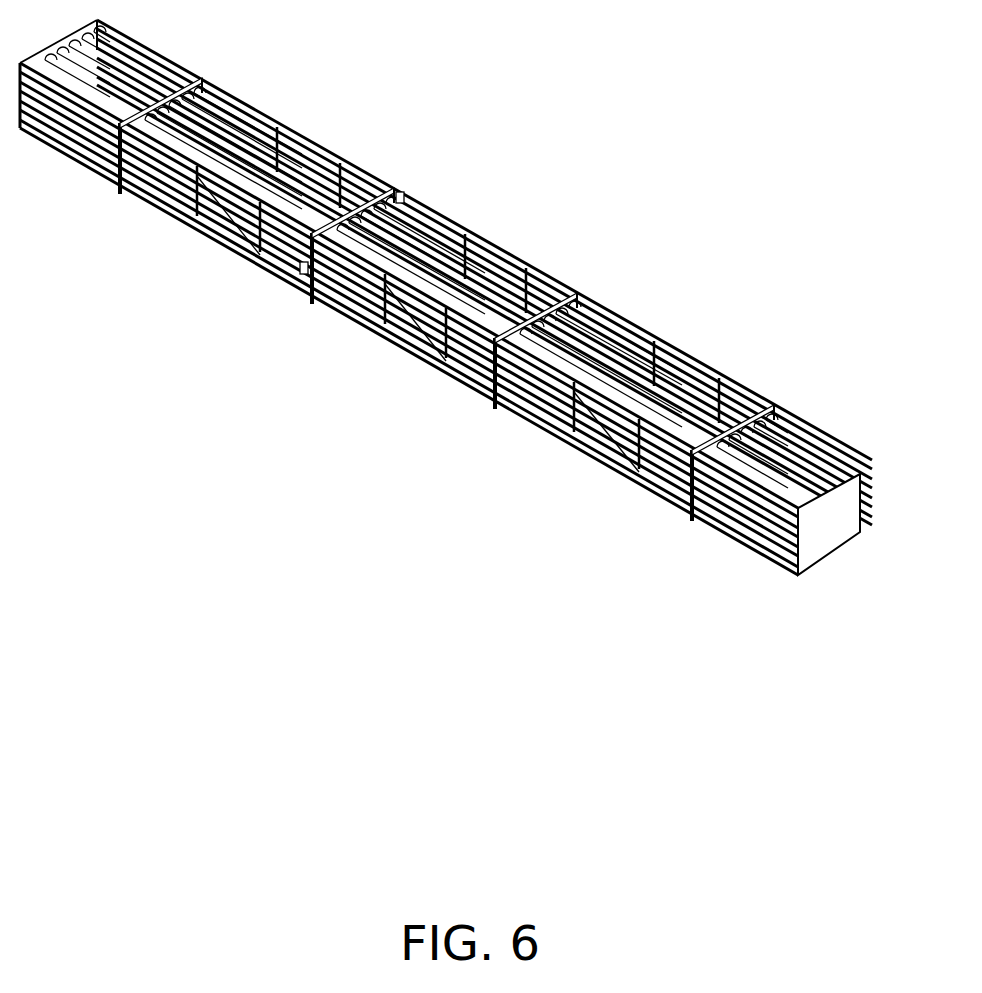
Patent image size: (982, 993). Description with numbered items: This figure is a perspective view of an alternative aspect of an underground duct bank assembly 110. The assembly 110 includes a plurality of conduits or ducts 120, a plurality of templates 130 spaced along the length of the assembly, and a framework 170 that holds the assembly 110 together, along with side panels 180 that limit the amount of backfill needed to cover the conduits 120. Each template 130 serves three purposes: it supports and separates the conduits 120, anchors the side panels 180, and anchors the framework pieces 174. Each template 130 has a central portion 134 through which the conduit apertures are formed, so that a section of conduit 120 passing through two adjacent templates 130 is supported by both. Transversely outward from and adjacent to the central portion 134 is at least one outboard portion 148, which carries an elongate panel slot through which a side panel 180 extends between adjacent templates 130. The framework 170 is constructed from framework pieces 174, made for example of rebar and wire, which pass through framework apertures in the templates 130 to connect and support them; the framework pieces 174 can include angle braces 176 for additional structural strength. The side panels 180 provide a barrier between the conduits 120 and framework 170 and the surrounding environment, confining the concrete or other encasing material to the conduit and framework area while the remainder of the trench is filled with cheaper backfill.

The underground duct bank assembly 110 is at (462, 306).
The conduit 120 is at (830, 455).
The template 130 is at (200, 78).
The central portion 134 is at (352, 214).
The outboard portion 148 is at (300, 272).
The framework 170 is at (298, 130).
The framework piece 174 is at (507, 275).
The angle brace 176 is at (432, 350).
The side panel 180 is at (648, 334).